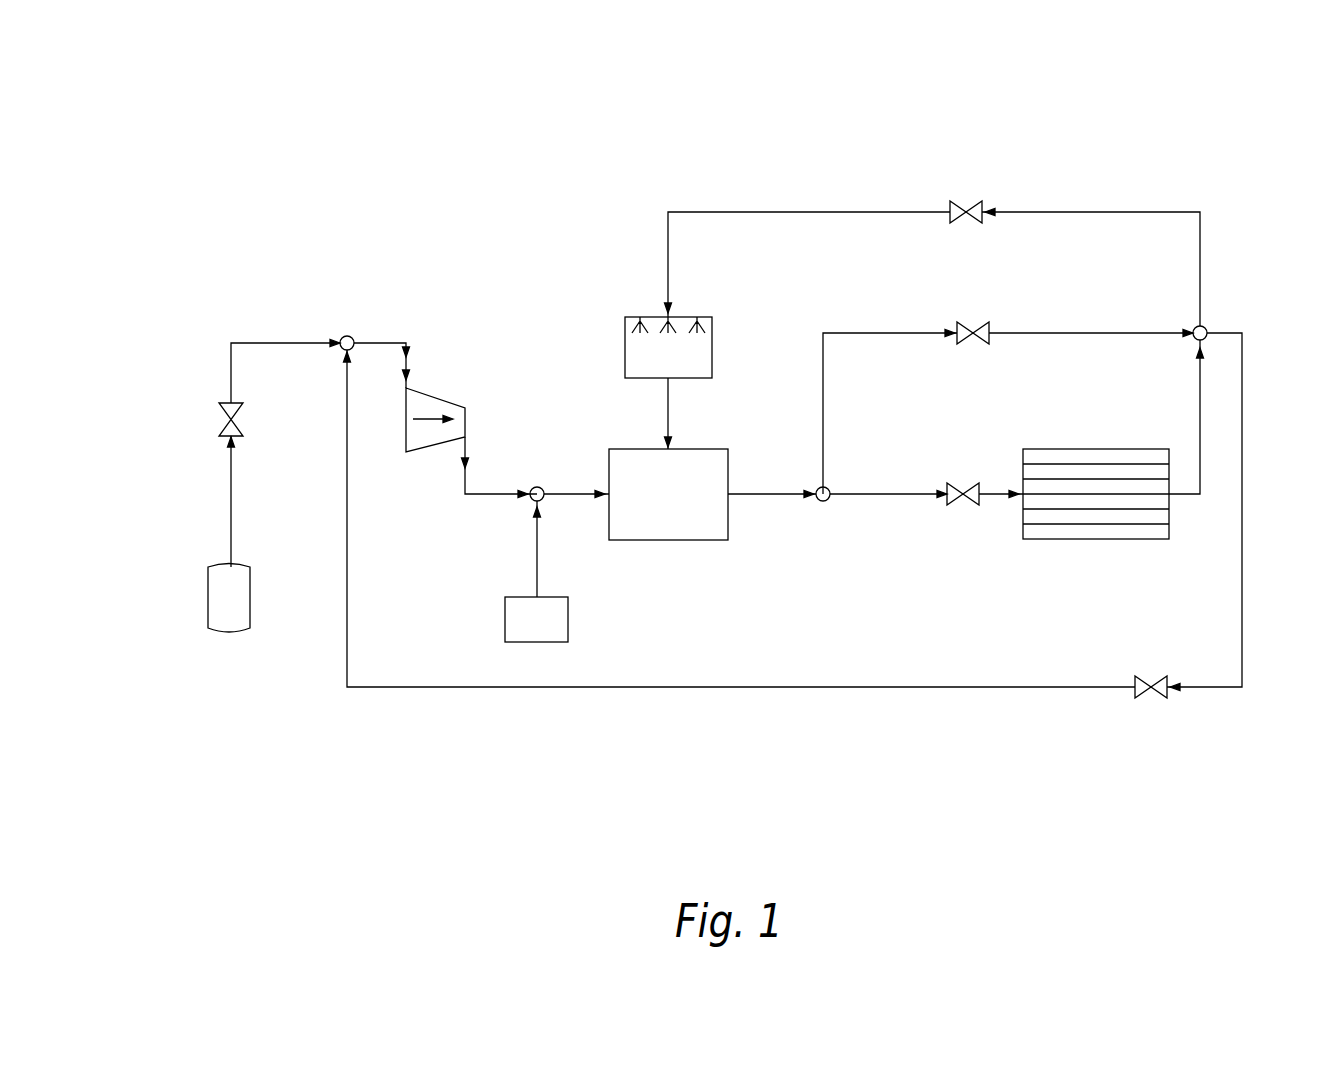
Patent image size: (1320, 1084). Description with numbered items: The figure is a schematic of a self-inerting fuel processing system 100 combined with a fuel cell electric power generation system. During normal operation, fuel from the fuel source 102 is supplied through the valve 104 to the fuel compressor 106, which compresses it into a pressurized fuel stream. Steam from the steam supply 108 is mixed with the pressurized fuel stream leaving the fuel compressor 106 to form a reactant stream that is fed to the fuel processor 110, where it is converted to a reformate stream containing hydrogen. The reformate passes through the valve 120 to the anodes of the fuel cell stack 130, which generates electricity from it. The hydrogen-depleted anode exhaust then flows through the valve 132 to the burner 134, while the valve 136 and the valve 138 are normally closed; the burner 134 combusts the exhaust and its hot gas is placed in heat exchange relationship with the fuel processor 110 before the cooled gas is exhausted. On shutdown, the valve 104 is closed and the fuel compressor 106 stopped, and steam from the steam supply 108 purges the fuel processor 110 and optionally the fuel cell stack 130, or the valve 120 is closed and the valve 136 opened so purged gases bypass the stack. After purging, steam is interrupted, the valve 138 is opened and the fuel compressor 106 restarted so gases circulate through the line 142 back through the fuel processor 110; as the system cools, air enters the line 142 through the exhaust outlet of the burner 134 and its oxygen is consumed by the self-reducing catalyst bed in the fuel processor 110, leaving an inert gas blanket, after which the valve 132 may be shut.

The fuel processing system 100 is at (440, 248).
The fuel source 102 is at (250, 582).
The valve 104 is at (243, 420).
The fuel compressor 106 is at (466, 414).
The steam supply 108 is at (536, 619).
The fuel processor 110 is at (668, 494).
The valve 120 is at (962, 492).
The fuel cell stack 130 is at (1080, 450).
The valve 132 is at (967, 210).
The burner 134 is at (668, 347).
The valve 136 is at (974, 331).
The valve 138 is at (1150, 685).
The line 142 is at (958, 687).